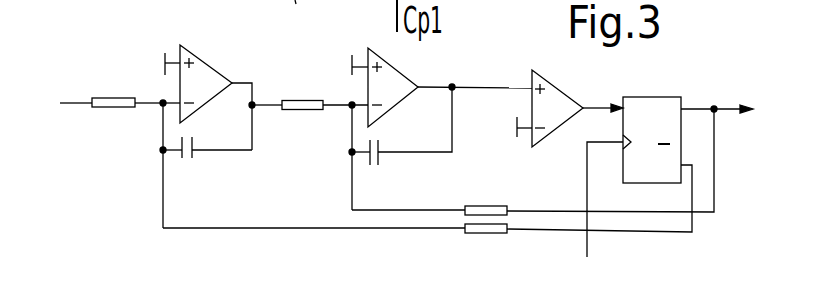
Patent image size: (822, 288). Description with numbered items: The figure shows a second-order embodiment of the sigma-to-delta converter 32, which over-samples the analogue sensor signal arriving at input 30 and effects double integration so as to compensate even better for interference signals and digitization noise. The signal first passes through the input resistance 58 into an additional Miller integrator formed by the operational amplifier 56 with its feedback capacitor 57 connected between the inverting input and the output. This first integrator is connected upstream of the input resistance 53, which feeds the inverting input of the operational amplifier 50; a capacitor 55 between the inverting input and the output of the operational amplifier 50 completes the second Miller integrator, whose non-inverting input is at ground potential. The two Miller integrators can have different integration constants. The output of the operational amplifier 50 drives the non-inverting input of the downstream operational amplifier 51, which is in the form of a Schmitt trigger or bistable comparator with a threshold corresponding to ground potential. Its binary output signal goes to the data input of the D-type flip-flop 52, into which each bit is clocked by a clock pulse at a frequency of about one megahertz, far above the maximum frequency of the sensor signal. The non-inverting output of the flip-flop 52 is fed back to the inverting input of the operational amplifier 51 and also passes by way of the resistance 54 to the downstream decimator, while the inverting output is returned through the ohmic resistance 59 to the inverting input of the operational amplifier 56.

The input signal S1 30 is at (77, 104).
The sigma-to-delta converter 32 is at (286, 238).
The operational amplifier 50 is at (403, 73).
The operational amplifier 51 is at (567, 93).
The flip-flop 52 is at (659, 97).
The input resistance 53 is at (297, 110).
The resistance 54 is at (485, 206).
The capacitor 55 is at (373, 160).
The operational amplifier 56 is at (213, 63).
The feedback capacitor 57 is at (183, 160).
The input resistance 58 is at (111, 98).
The ohmic resistance 59 is at (492, 234).